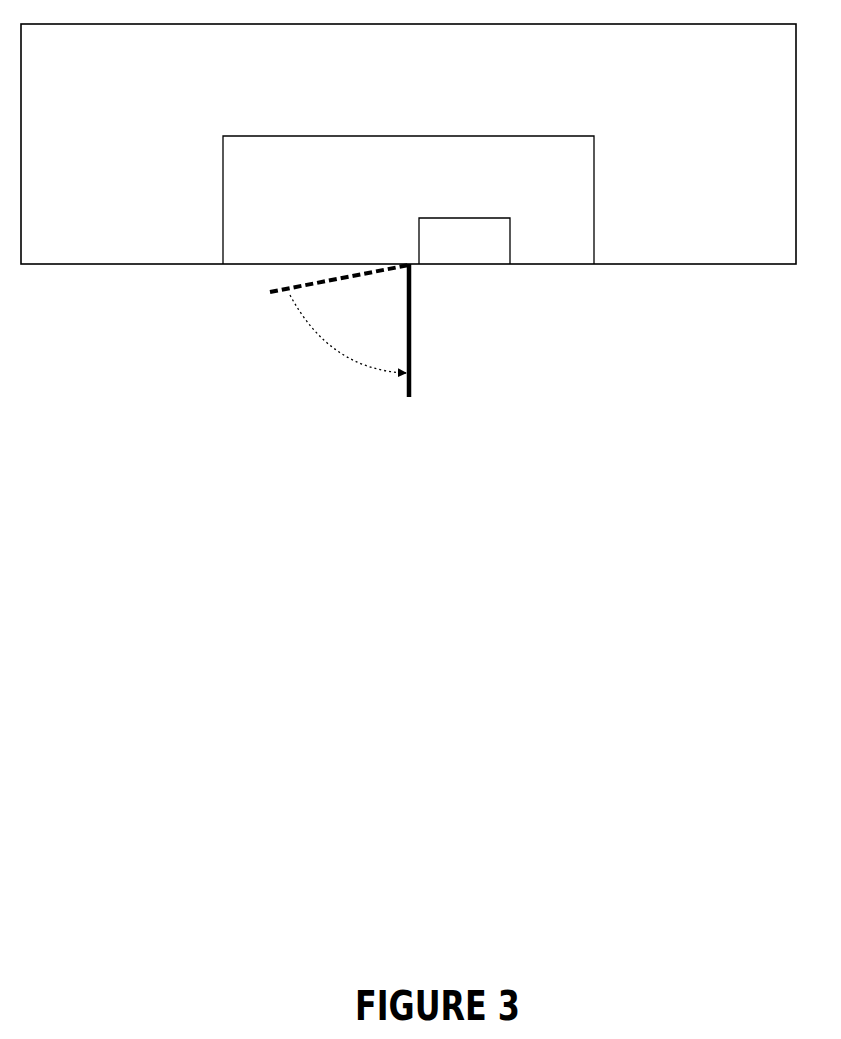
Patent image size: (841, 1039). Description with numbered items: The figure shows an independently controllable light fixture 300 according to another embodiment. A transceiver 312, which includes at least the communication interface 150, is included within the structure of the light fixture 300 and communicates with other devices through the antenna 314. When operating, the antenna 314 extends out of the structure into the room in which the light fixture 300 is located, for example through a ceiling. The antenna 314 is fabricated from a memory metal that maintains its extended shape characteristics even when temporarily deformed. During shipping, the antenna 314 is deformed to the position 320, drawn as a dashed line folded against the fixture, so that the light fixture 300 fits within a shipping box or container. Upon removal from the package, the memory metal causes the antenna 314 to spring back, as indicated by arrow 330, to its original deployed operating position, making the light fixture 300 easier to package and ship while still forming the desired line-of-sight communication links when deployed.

The independently controllable light fixture 300 is at (110, 70).
The transceiver 312 is at (408, 200).
The communication interface 150 is at (464, 241).
The antenna 314 is at (414, 325).
The position 320 is at (266, 288).
The arrow 330 is at (336, 359).